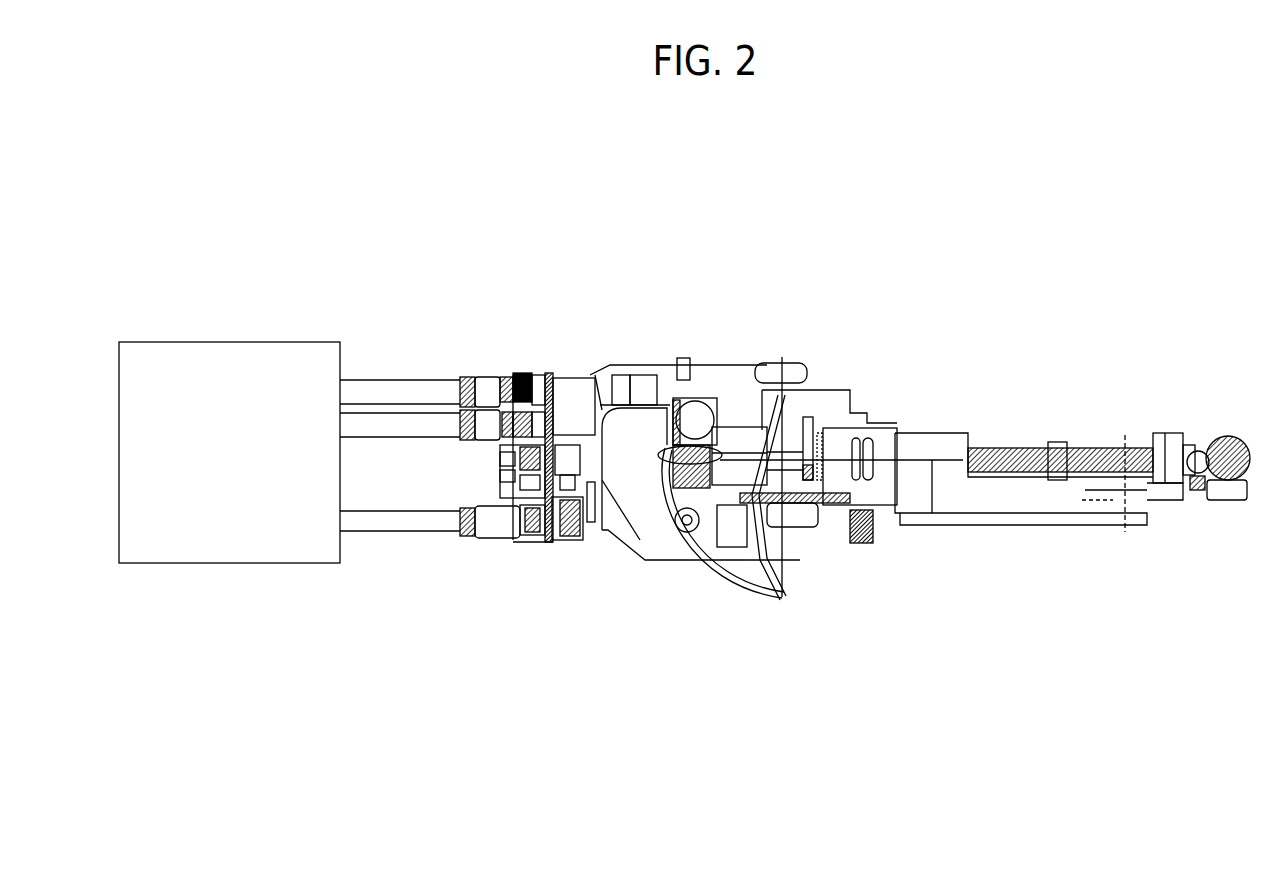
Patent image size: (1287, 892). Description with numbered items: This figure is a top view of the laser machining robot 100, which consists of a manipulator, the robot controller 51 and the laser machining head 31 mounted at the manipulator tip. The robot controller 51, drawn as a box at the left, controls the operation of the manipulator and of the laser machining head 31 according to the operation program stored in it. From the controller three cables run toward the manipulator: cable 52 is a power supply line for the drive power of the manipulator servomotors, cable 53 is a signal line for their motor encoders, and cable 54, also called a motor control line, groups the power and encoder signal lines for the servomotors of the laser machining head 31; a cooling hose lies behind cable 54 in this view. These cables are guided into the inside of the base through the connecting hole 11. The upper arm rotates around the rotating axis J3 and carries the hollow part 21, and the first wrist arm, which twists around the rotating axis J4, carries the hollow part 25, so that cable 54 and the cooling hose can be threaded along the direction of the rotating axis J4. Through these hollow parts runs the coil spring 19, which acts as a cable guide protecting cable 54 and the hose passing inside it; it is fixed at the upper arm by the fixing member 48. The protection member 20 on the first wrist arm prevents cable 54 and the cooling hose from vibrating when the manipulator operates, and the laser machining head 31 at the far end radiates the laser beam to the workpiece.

The laser machining robot 100 is at (1173, 777).
The robot controller 51 is at (243, 342).
The cable 52 is at (357, 378).
The cable 53 is at (407, 415).
The cable 54 is at (367, 532).
The connecting hole 11 is at (493, 538).
The fixing member 48 is at (808, 417).
The hollow part 21 is at (880, 450).
The rotating axis J3 is at (780, 459).
The rotating axis J4 is at (907, 462).
The coil spring 19 is at (1005, 450).
The protection member 20 is at (1062, 445).
The hollow part 25 is at (1110, 438).
The laser machining head 31 is at (1237, 425).